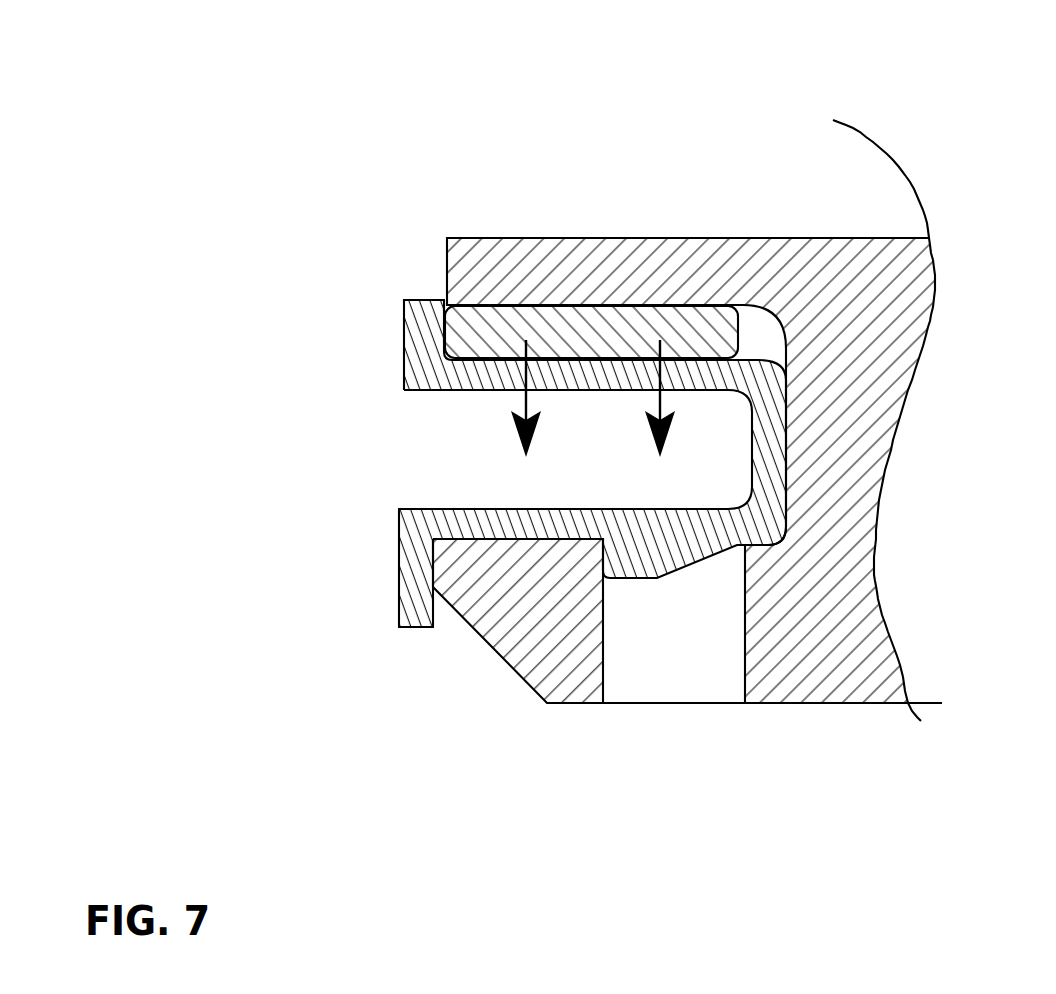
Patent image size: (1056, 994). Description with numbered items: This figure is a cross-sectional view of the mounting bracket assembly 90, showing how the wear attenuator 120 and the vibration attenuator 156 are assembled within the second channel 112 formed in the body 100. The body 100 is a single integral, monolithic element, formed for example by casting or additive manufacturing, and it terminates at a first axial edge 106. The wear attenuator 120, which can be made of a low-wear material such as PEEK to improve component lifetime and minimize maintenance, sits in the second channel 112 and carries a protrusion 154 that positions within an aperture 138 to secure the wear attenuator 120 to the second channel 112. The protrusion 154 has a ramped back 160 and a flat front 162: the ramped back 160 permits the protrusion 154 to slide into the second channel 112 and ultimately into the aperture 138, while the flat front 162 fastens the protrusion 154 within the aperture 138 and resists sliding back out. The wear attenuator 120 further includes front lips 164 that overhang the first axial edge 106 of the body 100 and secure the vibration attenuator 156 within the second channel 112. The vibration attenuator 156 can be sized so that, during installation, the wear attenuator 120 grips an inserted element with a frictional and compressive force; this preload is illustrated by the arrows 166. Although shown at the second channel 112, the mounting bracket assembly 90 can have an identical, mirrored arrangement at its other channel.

The mounting bracket assembly 90 is at (1007, 46).
The body 100 is at (934, 258).
The first axial edge 106 is at (442, 250).
The second channel 112 is at (804, 457).
The wear attenuator 120 is at (509, 507).
The aperture 138 is at (707, 676).
The protrusion 154 is at (646, 591).
The vibration attenuator 156 is at (543, 323).
The ramped back 160 is at (711, 558).
The flat front 162 is at (600, 563).
The front lips 164 is at (404, 329).
The arrows 166 is at (663, 352).